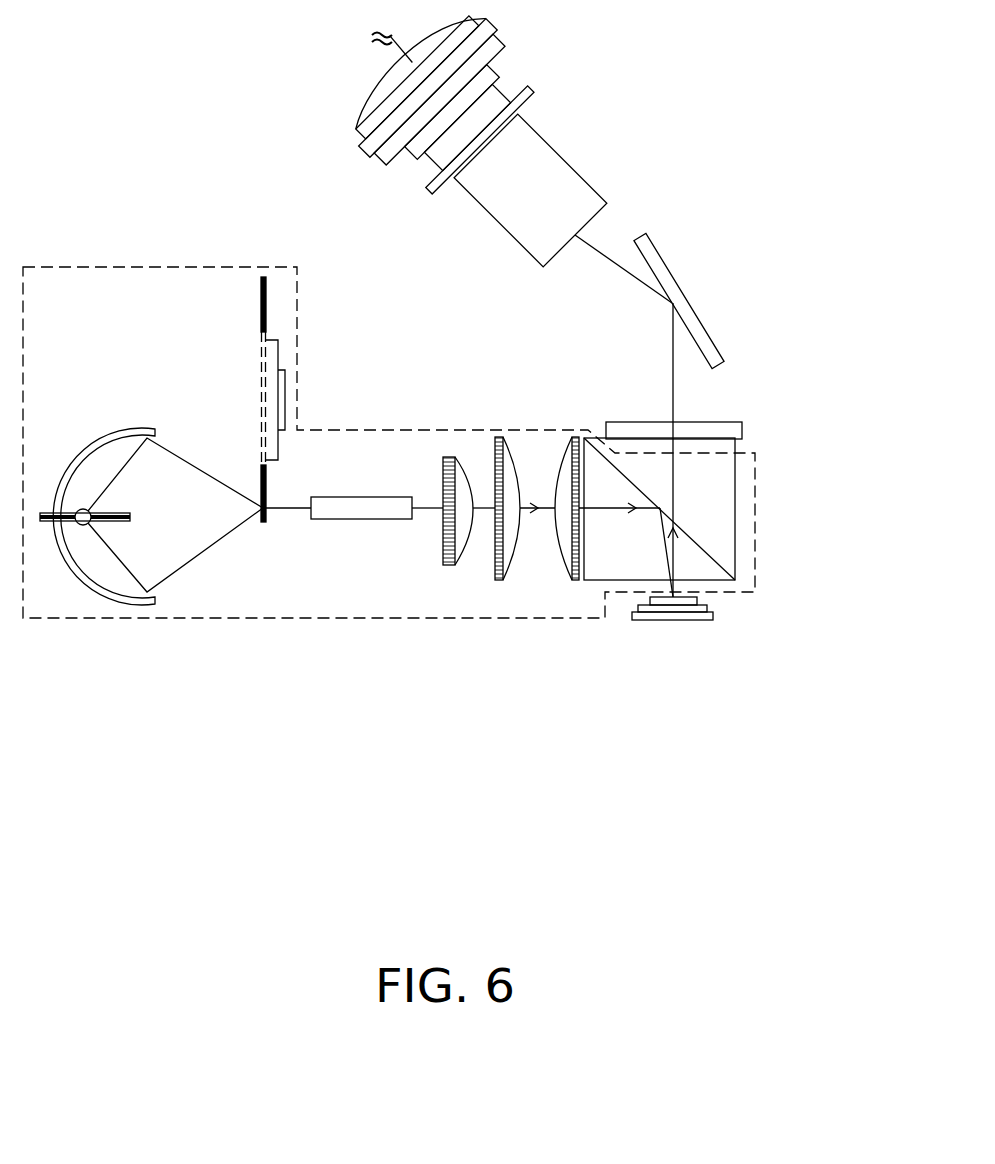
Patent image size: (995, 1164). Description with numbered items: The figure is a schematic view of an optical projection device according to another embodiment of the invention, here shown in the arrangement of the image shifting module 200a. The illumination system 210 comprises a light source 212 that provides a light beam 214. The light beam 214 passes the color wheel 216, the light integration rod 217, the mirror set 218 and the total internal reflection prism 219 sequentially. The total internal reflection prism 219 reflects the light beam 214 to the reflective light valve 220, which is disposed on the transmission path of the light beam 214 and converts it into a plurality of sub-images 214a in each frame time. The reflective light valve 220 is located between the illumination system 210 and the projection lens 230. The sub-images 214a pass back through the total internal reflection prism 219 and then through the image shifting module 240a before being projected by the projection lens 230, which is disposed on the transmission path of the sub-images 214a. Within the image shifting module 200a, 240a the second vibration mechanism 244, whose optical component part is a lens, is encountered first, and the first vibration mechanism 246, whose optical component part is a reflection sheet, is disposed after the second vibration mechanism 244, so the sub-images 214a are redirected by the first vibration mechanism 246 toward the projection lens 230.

The image shifting module 200a is at (503, 733).
The illumination system 210 is at (381, 428).
The light source 212 is at (85, 511).
The light beam 214 is at (285, 509).
The sub-images 214a is at (673, 492).
The color wheel 216 is at (267, 296).
The light integration rod 217 is at (358, 509).
The mirror set 218 is at (580, 421).
The total internal reflection prism 219 is at (727, 537).
The reflective light valve 220 is at (688, 604).
The projection lens 230 is at (545, 155).
The image shifting module 240a is at (755, 343).
The second vibration mechanism 244 is at (732, 432).
The first vibration mechanism 246 is at (692, 322).